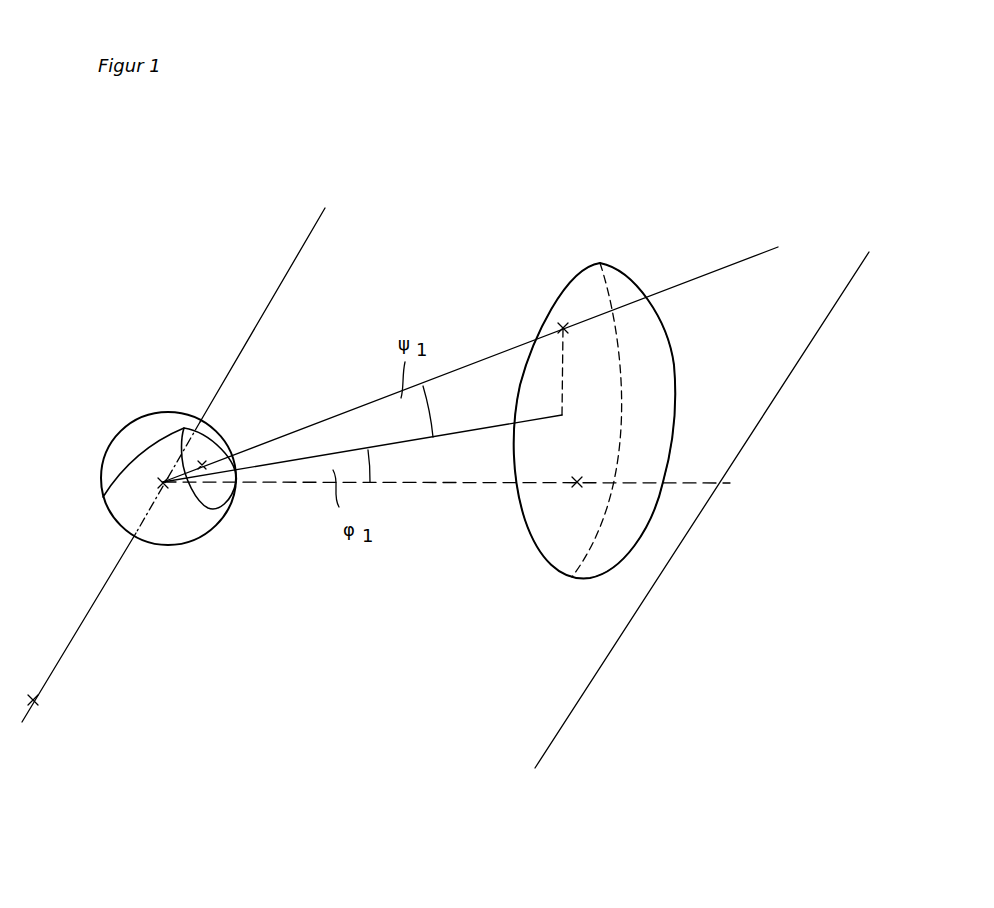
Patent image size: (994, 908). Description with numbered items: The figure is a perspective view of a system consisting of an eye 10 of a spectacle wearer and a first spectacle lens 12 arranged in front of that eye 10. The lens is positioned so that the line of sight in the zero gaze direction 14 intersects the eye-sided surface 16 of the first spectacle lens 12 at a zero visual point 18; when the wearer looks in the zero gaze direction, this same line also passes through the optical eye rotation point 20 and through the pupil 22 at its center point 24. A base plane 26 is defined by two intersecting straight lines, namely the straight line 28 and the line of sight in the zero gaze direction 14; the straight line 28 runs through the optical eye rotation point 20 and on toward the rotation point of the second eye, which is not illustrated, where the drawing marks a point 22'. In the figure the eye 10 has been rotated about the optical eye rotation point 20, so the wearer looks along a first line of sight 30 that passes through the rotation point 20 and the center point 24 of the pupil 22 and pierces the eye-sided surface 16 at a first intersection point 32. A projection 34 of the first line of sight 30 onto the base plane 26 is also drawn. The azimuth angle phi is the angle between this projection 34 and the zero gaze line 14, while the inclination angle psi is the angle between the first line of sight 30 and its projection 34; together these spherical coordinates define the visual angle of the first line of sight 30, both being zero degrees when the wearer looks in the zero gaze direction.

The eye 10 is at (131, 437).
The first spectacle lens 12 is at (662, 382).
The line of sight in the zero gaze direction 14 is at (703, 485).
The eye-sided surface 16 is at (571, 277).
The zero visual point 18 is at (578, 480).
The optical eye rotation point 20 is at (165, 488).
The pupil 22 is at (220, 478).
The point on axis 22' is at (59, 701).
The center point 24 is at (203, 462).
The base plane 26 is at (563, 700).
The straight line 28 is at (291, 268).
The first line of sight 30 is at (481, 361).
The first intersection point 32 is at (560, 325).
The projection of the first line of sight 34 is at (466, 432).